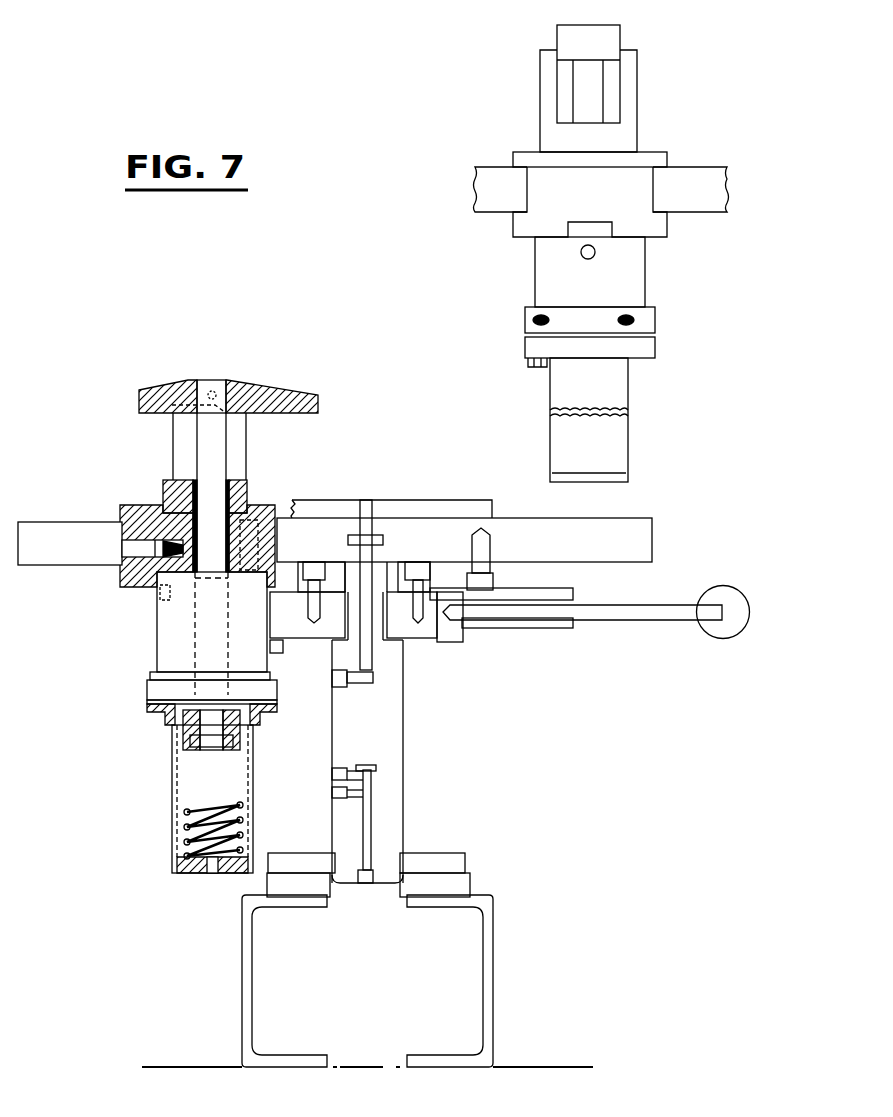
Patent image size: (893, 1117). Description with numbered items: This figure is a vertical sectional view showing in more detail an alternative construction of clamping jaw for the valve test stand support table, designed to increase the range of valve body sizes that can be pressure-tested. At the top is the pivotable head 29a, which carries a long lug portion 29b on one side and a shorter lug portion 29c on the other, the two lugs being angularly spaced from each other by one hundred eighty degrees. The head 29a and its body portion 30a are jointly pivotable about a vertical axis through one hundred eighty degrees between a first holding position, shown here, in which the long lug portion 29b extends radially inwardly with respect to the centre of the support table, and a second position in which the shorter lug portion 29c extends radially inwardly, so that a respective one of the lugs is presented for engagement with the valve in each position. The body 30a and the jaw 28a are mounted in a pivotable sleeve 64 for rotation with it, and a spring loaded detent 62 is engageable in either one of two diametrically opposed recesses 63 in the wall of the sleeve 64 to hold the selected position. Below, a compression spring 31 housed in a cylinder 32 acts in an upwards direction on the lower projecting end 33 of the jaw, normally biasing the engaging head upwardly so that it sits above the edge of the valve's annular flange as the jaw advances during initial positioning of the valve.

The pivotable head 29a is at (246, 372).
The long lug portion 29b is at (287, 393).
The shorter lug portion 29c is at (162, 392).
The jaw 28a is at (210, 473).
The body portion 30a is at (237, 452).
The pivotable sleeve 64 is at (242, 497).
The spring loaded detent 62 is at (160, 548).
The recesses 63 is at (192, 613).
The lower projecting end 33 is at (210, 732).
The cylinder 32 is at (173, 778).
The compression spring 31 is at (187, 817).